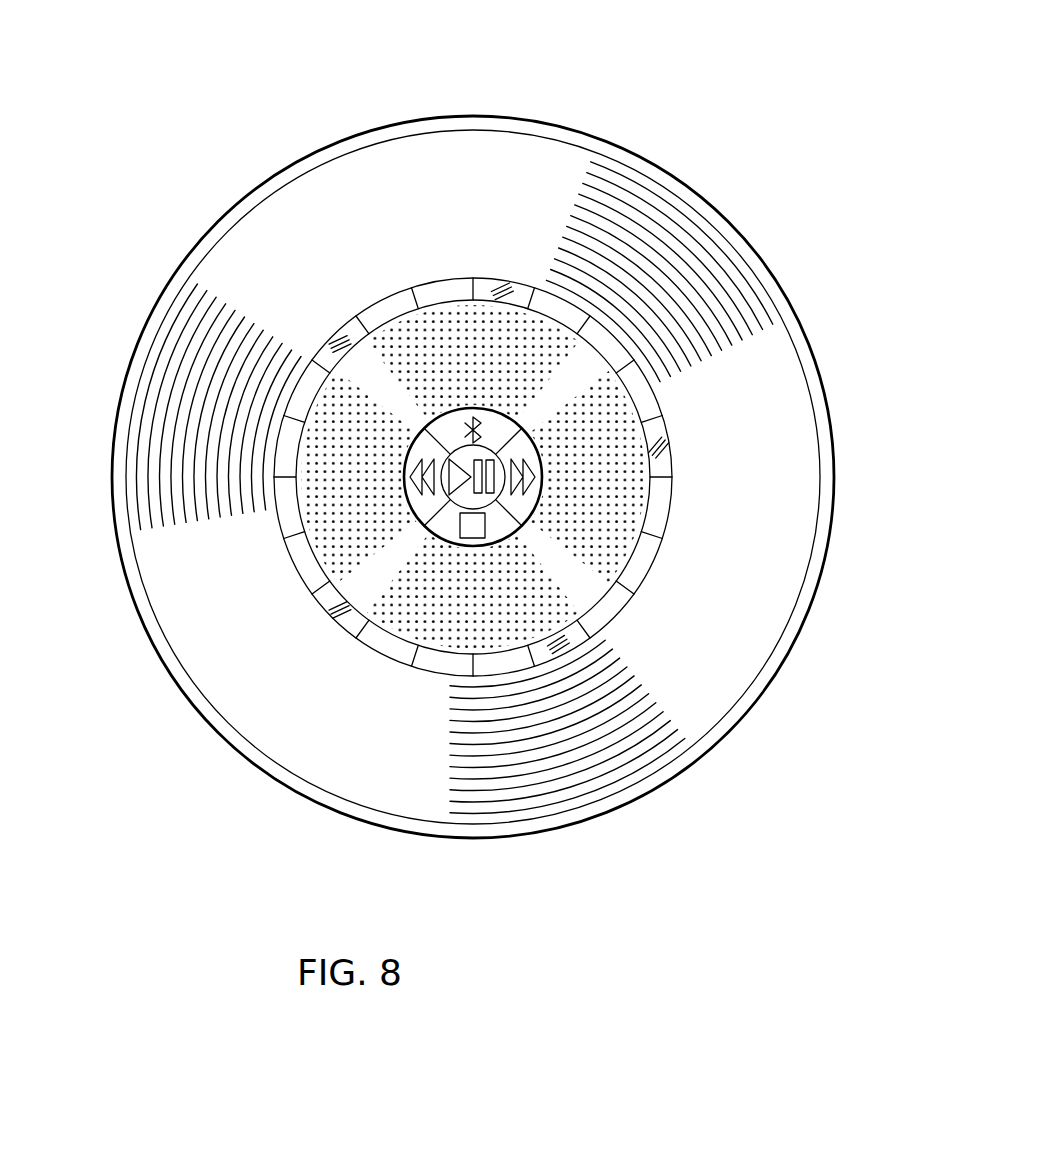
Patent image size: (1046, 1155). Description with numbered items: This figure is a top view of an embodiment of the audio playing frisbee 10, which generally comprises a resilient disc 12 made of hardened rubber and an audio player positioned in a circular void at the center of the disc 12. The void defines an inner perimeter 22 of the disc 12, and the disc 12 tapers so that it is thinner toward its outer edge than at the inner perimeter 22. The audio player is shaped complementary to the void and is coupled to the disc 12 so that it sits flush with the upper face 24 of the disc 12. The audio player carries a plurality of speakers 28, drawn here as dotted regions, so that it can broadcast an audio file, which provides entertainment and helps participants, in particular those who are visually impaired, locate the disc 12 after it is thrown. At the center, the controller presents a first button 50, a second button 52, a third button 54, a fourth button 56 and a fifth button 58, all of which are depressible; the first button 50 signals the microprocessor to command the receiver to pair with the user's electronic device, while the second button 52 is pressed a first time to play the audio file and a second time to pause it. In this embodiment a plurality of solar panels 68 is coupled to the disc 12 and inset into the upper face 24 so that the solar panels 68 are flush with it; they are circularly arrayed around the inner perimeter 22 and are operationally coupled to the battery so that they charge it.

The audio playing frisbee 10 is at (690, 102).
The disc 12 is at (353, 178).
The inner perimeter 22 is at (603, 357).
The upper face 24 is at (679, 640).
The speakers 28 is at (550, 592).
The first button 50 is at (448, 425).
The second button 52 is at (476, 495).
The third button 54 is at (440, 530).
The fourth button 56 is at (543, 470).
The fifth button 58 is at (418, 502).
The solar panels 68 is at (304, 387).